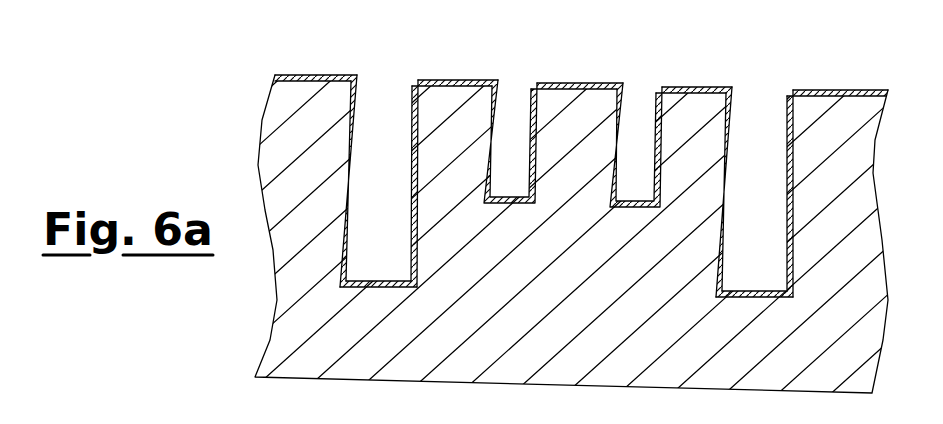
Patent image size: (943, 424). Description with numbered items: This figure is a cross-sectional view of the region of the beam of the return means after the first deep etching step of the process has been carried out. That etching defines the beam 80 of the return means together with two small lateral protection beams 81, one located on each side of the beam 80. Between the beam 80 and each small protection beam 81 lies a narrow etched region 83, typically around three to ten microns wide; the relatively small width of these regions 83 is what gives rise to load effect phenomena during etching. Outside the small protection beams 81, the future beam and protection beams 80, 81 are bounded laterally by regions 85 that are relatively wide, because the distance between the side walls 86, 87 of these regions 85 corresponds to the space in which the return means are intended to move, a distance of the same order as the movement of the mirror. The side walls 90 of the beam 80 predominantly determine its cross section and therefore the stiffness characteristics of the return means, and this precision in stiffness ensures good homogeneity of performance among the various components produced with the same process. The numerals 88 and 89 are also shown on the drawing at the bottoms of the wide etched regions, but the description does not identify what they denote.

The beam 80 is at (577, 117).
The small lateral protection beams 81 is at (460, 117).
The etched regions 83 is at (510, 107).
The regions 85 is at (382, 107).
The side wall 86 is at (800, 137).
The side wall 87 is at (348, 122).
The trench bottom 88 is at (723, 271).
The trench bottom 89 is at (411, 271).
The side walls 90 is at (633, 107).